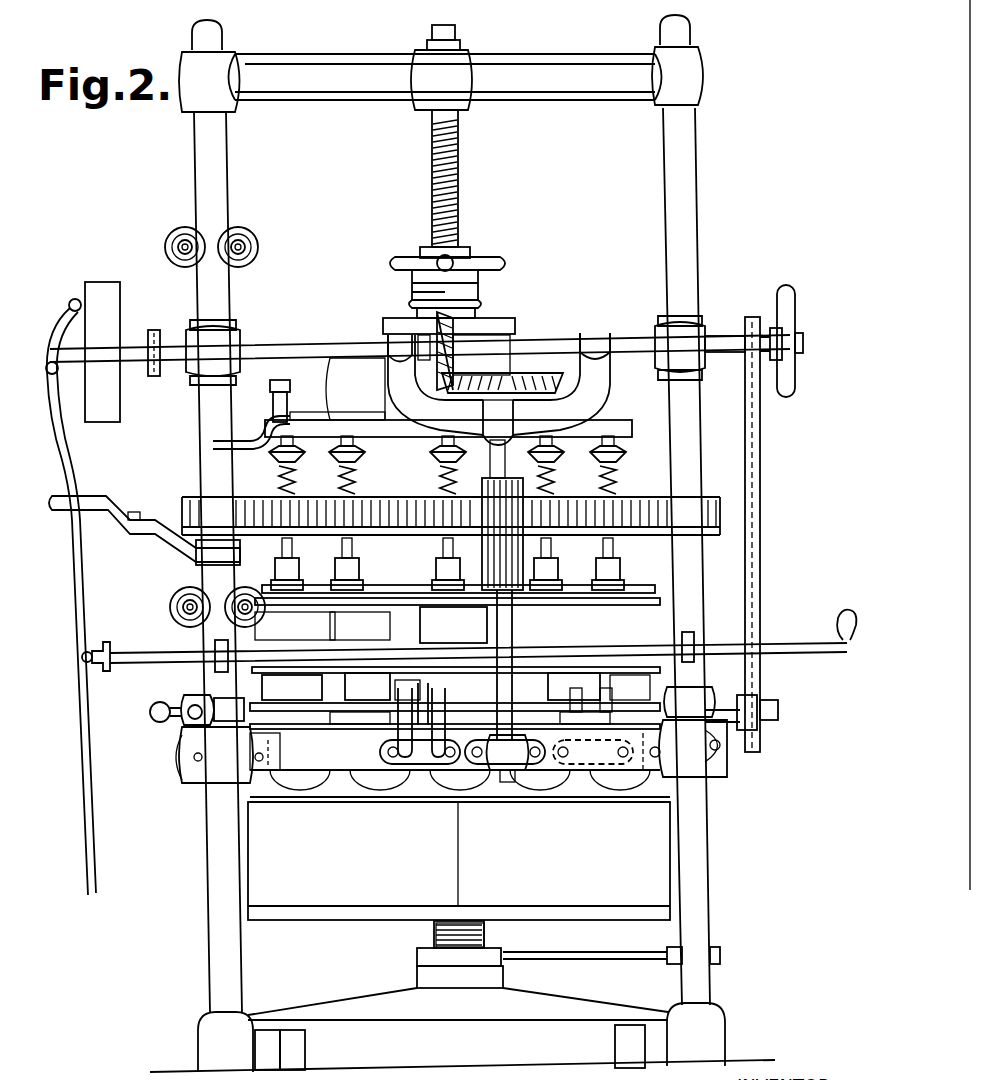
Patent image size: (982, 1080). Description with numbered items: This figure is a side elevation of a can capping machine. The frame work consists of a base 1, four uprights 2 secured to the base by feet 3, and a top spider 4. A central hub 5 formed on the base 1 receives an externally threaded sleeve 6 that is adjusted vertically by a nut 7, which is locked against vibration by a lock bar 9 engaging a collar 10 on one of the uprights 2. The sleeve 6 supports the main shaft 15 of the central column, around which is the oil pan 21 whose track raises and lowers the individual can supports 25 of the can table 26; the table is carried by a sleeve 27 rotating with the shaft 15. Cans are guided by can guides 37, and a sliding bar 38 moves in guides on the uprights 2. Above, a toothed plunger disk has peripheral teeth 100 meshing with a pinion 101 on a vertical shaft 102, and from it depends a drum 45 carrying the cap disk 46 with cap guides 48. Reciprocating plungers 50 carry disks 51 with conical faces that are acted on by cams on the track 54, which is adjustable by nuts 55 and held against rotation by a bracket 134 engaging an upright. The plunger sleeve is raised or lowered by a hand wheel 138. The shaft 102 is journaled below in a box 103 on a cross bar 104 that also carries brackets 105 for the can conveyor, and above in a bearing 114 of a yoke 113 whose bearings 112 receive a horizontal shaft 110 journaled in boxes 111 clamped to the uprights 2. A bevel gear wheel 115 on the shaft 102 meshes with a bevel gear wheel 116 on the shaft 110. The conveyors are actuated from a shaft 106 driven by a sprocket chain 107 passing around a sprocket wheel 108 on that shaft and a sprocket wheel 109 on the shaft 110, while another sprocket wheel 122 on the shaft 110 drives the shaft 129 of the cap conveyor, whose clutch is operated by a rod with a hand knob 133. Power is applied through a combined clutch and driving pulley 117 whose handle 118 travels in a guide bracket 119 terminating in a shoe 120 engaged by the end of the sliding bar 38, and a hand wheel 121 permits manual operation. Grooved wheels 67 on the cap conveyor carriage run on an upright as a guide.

The base 1 is at (462, 1030).
The uprights 2 is at (444, 513).
The feet 3 is at (461, 1037).
The top spider 4 is at (570, 50).
The central hub 5 is at (460, 977).
The externally threaded sleeve 6 is at (488, 940).
The nut 7 is at (448, 958).
The lock bar 9 is at (626, 951).
The collar 10 is at (714, 946).
The main shaft 15 is at (430, 202).
The oil pan 21 is at (355, 921).
The can supports 25 is at (628, 712).
The can table 26 is at (278, 688).
The sleeve 27 is at (453, 625).
The can guides 37 is at (383, 666).
The sliding bar 38 is at (190, 656).
The drum 45 is at (452, 495).
The cap disk 46 is at (330, 656).
The cap guides 48 is at (377, 590).
The plungers 50 is at (602, 566).
The disk 51 is at (620, 466).
The track 54 is at (330, 430).
The nuts 55 is at (383, 325).
The grooved wheels 67 is at (236, 237).
The teeth 100 is at (398, 512).
The pinion 101 is at (490, 545).
The shaft 102 is at (512, 638).
The box 103 is at (503, 760).
The cross bar 104 is at (297, 712).
The brackets 105 is at (418, 755).
The shaft 106 is at (240, 802).
The sprocket chain 107 is at (760, 580).
The sprocket wheel 108 is at (768, 722).
The sprocket wheel 109 is at (746, 356).
The shaft 110 is at (332, 352).
The boxes 111 is at (445, 350).
The bearings 112 is at (402, 345).
The yoke 113 is at (499, 384).
The bearing 114 is at (498, 422).
The bevel gear wheel 115 is at (520, 372).
The bevel gear wheel 116 is at (460, 326).
The combined clutch and driving pulley 117 is at (102, 352).
The handle 118 is at (78, 487).
The guide bracket 119 is at (116, 519).
The shoe 120 is at (108, 650).
The hand wheel 121 is at (790, 320).
The sprocket wheel 122 is at (160, 337).
The shaft 129 is at (190, 716).
The hand knob 133 is at (150, 712).
The bracket 134 is at (251, 412).
The hand wheel 138 is at (480, 258).